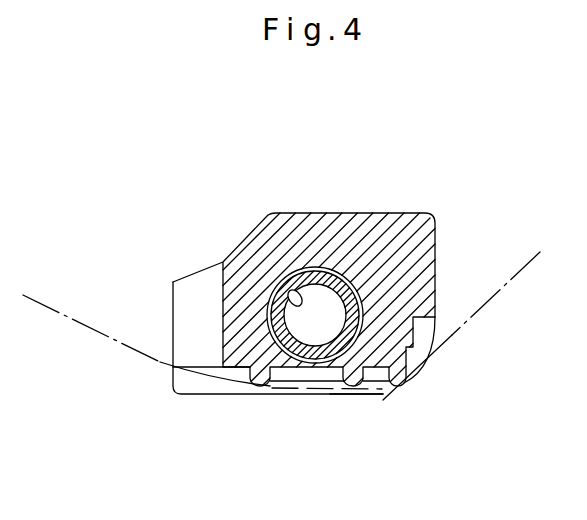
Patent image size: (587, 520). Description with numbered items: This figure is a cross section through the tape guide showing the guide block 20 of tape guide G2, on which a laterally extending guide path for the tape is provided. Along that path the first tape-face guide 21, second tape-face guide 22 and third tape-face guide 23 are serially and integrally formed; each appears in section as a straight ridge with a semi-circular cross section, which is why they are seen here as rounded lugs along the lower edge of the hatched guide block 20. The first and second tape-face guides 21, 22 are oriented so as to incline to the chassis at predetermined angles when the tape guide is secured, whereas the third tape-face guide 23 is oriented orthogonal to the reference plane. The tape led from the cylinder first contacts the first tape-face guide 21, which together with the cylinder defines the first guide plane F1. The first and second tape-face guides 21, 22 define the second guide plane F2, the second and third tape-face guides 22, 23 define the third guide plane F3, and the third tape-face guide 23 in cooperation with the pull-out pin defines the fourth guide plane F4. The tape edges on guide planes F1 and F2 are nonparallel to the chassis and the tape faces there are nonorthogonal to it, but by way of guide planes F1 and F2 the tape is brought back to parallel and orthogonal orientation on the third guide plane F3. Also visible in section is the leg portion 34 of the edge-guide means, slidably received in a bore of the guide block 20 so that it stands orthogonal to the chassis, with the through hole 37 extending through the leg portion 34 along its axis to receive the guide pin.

The guide block 20 is at (361, 233).
The leg portion 34 is at (312, 272).
The through hole 37 is at (288, 289).
The first tape-face guide 21 is at (261, 386).
The second tape-face guide 22 is at (352, 397).
The third tape-face guide 23 is at (397, 387).
The first guide plane F1 is at (57, 312).
The second guide plane F2 is at (305, 388).
The third guide plane F3 is at (378, 390).
The fourth guide plane F4 is at (468, 314).